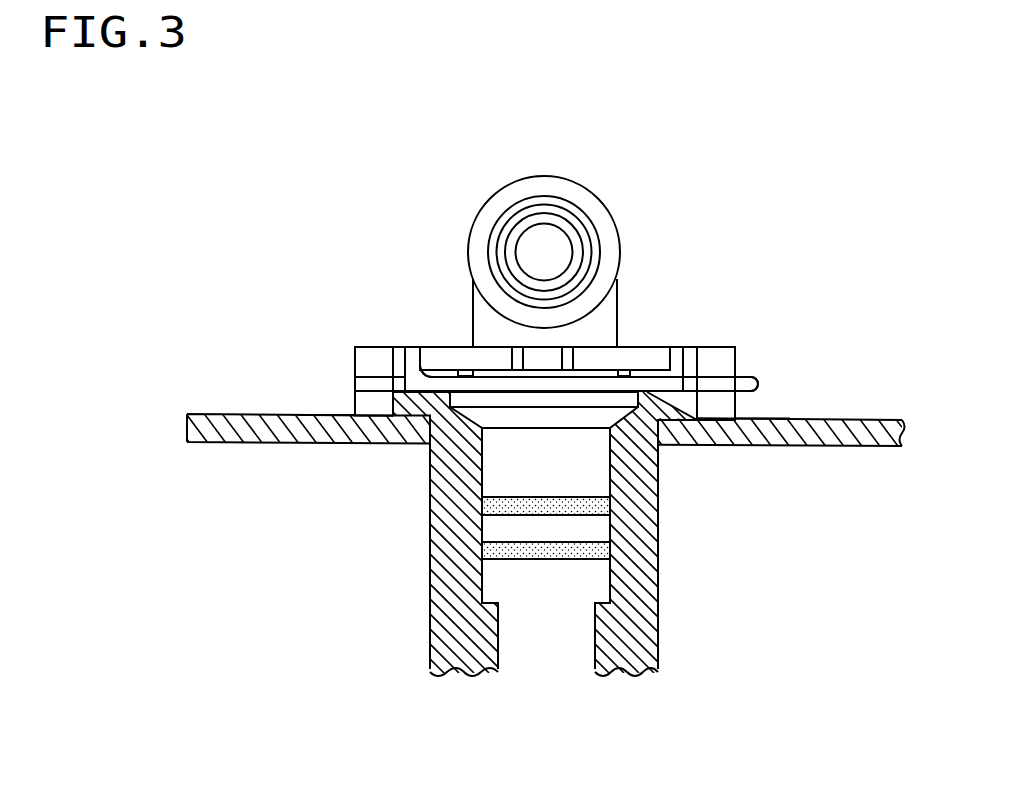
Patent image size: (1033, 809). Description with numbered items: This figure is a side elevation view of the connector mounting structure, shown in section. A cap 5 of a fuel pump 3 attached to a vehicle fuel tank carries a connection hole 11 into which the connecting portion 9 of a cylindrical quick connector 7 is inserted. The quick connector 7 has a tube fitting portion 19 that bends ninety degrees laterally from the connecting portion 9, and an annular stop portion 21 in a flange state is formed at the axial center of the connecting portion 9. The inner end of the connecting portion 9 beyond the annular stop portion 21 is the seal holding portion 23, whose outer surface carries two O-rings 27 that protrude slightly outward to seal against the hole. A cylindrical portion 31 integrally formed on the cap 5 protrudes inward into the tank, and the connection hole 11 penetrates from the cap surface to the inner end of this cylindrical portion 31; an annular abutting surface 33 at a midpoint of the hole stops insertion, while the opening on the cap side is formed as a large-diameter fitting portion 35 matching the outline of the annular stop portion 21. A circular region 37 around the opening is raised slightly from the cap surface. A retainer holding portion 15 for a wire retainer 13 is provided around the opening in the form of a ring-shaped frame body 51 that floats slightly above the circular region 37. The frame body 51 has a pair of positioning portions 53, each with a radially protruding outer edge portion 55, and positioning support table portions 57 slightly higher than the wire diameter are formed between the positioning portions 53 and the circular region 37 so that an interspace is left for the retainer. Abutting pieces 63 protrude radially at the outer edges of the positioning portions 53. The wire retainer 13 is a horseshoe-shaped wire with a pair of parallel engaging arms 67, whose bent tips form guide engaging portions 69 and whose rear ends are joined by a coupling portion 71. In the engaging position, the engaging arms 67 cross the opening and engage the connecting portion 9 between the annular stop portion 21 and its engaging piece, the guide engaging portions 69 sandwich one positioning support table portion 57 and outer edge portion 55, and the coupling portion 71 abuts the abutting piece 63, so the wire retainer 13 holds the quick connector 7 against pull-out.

The fuel pump 3 is at (832, 392).
The cap 5 is at (779, 417).
The quick connector 7 is at (468, 194).
The connecting portion 9 is at (625, 481).
The connection hole 11 is at (500, 645).
The wire retainer 13 is at (524, 405).
The retainer holding portion 15 is at (658, 312).
The tube fitting portion 19 is at (553, 220).
The annular stop portion 21 is at (565, 408).
The seal holding portion 23 is at (492, 427).
The O-ring 27 is at (605, 508).
The cylindrical portion 31 is at (463, 624).
The annular abutting surface 33 is at (500, 588).
The fitting portion 35 is at (497, 463).
The circular region 37 is at (355, 408).
The frame body 51 is at (455, 346).
The positioning portion 53 is at (422, 360).
The outer edge portion 55 is at (355, 349).
The positioning support table portion 57 is at (355, 385).
The abutting piece 63 is at (365, 372).
The engaging arm 67 is at (688, 383).
The guide engaging portion 69 is at (413, 360).
The coupling portion 71 is at (757, 377).